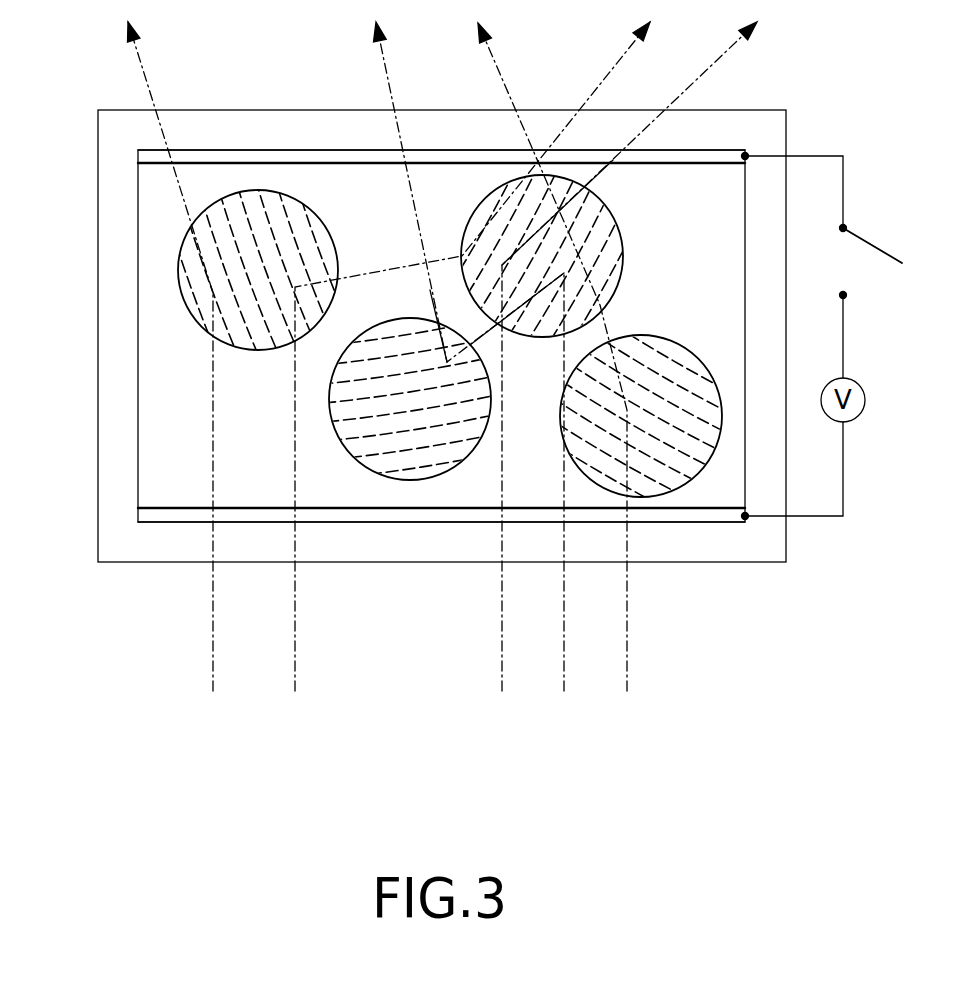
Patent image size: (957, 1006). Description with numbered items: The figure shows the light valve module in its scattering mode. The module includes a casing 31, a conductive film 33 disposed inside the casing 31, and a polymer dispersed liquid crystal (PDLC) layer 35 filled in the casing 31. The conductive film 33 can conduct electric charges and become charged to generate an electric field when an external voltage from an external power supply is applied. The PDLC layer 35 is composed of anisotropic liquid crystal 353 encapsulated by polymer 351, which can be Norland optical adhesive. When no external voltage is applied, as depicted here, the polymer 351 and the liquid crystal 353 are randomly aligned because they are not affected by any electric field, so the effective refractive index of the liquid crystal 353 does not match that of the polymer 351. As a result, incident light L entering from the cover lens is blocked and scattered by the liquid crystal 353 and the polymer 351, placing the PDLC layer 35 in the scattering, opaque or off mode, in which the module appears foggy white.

The casing 31 is at (117, 417).
The conductive film 33 is at (153, 156).
The polymer dispersed liquid crystal (PDLC) layer 35 is at (417, 393).
The polymer 351 is at (669, 451).
The liquid crystal 353 is at (650, 354).
The incident light L is at (295, 618).